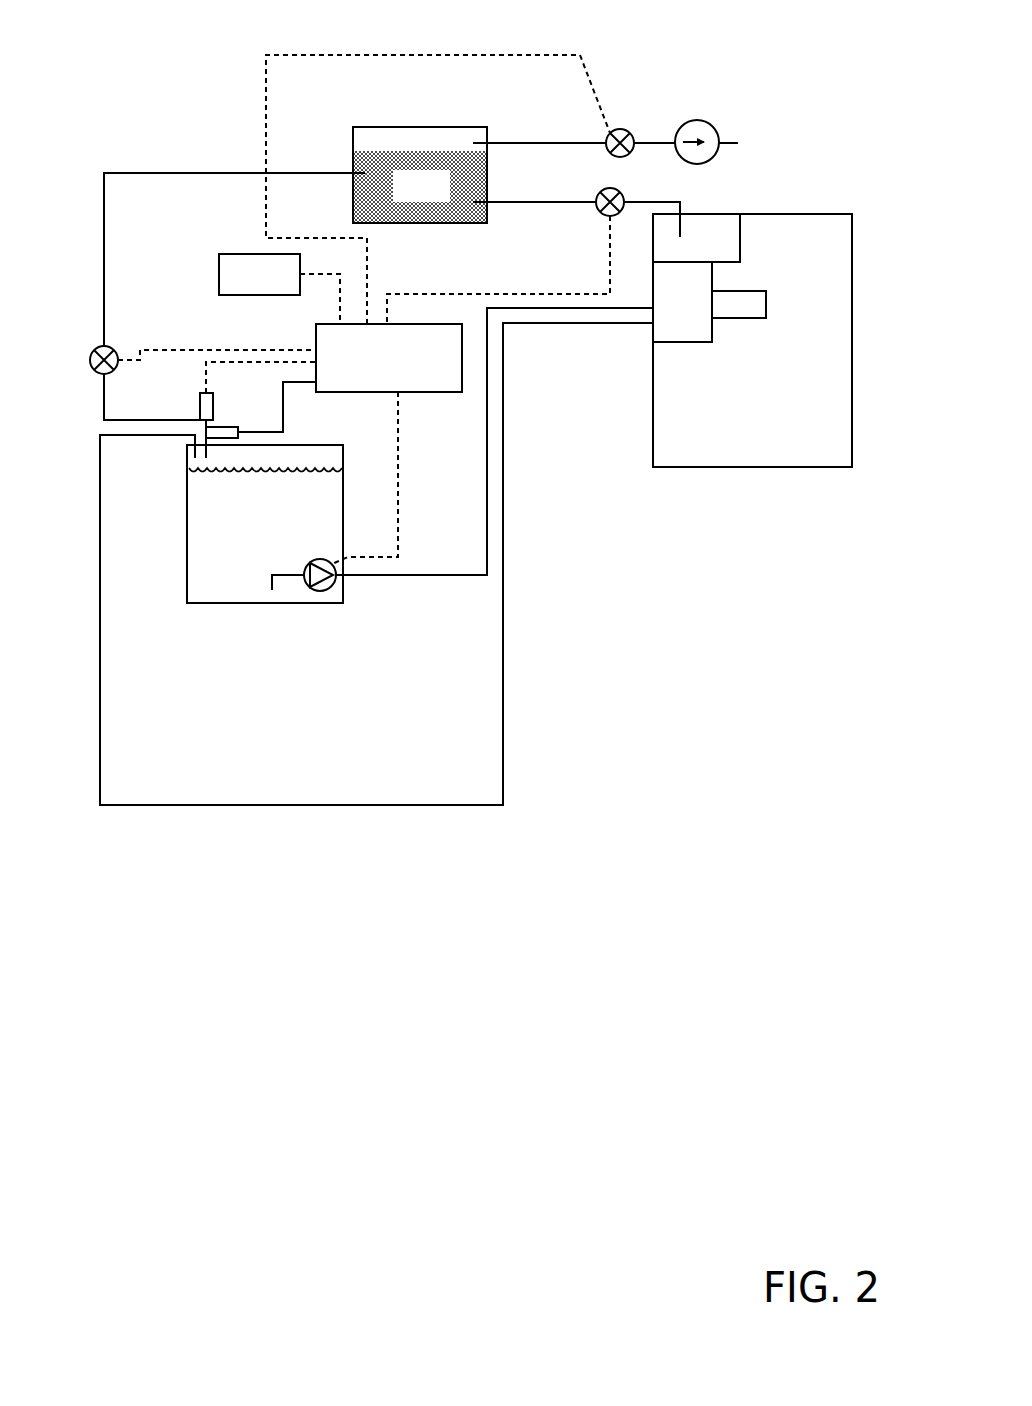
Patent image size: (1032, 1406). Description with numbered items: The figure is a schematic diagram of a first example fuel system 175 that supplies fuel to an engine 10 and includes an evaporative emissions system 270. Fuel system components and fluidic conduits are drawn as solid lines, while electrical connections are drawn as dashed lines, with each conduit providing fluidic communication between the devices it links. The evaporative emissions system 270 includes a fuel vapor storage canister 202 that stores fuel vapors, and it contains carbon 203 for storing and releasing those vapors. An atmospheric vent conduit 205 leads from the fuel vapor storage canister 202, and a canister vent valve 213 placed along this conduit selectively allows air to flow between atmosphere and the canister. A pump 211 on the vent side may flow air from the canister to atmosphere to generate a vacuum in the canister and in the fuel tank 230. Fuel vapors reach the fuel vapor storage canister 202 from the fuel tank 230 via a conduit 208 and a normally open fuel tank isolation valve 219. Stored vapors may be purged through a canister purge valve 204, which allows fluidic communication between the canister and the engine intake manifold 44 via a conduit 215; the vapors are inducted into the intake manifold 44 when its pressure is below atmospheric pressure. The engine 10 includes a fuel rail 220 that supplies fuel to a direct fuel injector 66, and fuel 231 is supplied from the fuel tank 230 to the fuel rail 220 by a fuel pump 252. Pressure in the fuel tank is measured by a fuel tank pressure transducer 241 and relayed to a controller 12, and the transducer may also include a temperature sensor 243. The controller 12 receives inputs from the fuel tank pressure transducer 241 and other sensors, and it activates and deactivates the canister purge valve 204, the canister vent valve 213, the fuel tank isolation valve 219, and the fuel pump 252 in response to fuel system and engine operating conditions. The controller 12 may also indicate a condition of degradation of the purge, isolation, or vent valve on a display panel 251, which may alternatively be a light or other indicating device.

The fuel system 175 is at (137, 36).
The evaporative emissions system 270 is at (597, 44).
The fuel vapor storage canister 202 is at (353, 126).
The carbon 203 is at (420, 187).
The atmospheric vent conduit 205 is at (502, 141).
The canister vent valve 213 is at (620, 129).
The pump 211 is at (715, 133).
The conduit 215 is at (683, 210).
The canister purge valve 204 is at (617, 219).
The conduit 208 is at (105, 225).
The fuel tank isolation valve 219 is at (110, 347).
The display panel 251 is at (279, 289).
The controller 12 is at (389, 358).
The fuel tank pressure transducer 241 is at (199, 413).
The temperature sensor 243 is at (238, 428).
The fuel tank 230 is at (317, 445).
The fuel 231 is at (252, 516).
The fuel pump 252 is at (310, 562).
The engine 10 is at (853, 287).
The intake manifold 44 is at (696, 238).
The fuel rail 220 is at (682, 302).
The direct fuel injector 66 is at (739, 304).